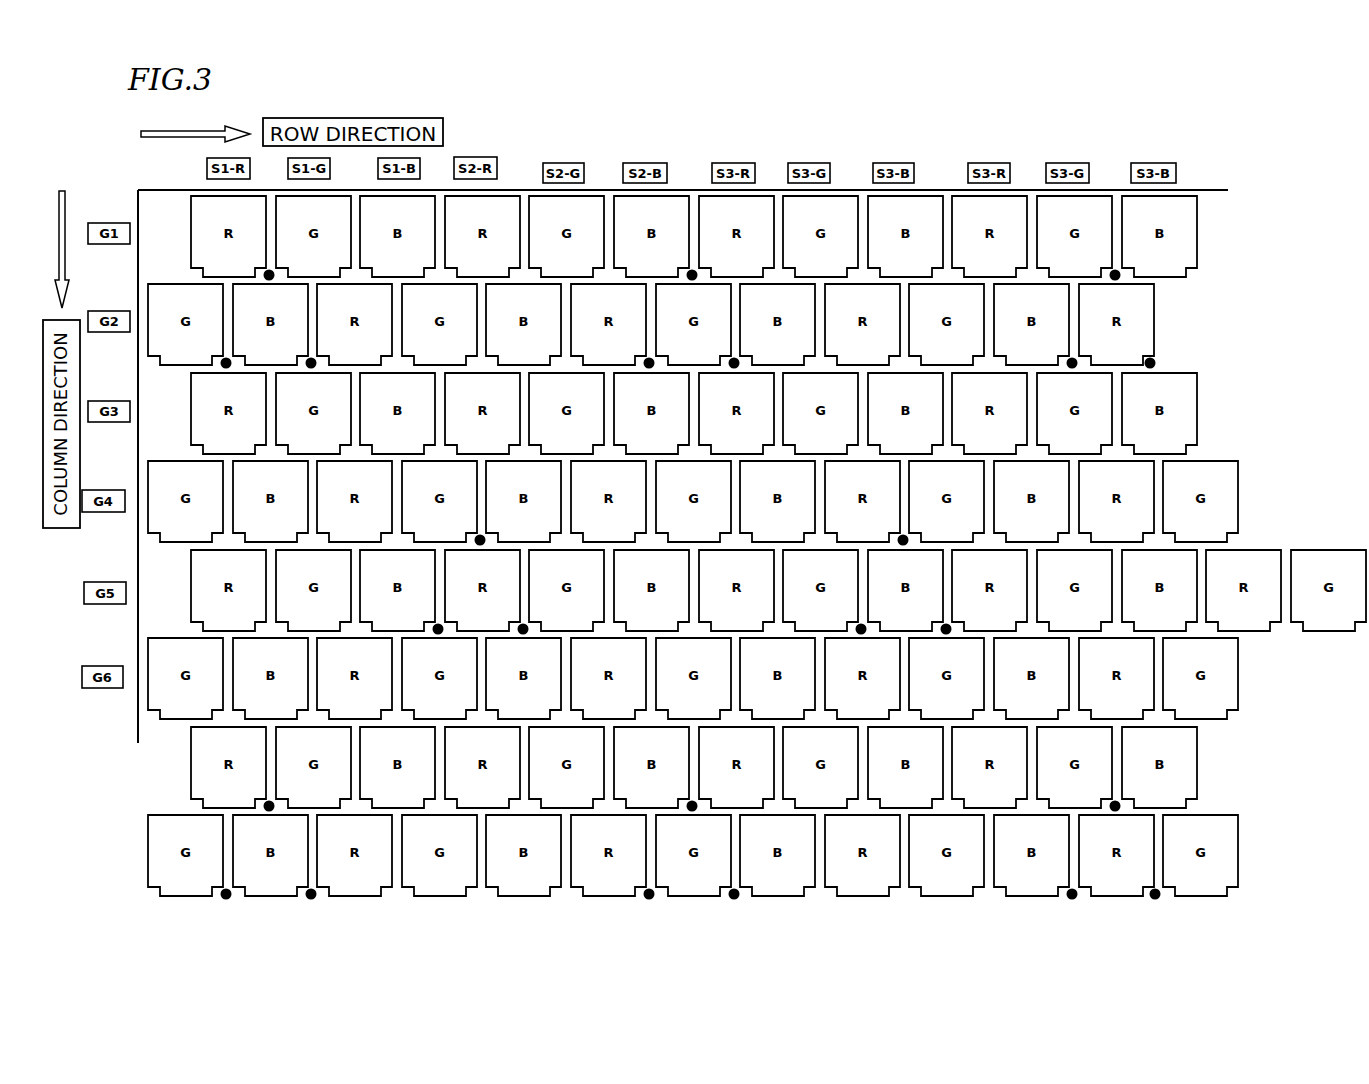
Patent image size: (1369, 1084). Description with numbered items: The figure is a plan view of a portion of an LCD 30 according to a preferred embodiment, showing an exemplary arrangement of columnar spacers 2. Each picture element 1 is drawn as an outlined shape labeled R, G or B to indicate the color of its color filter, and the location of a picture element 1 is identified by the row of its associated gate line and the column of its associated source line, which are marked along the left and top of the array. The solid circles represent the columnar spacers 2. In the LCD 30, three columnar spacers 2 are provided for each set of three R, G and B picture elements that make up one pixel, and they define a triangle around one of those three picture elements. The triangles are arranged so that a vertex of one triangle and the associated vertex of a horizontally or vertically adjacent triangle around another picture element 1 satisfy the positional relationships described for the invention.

The LCD 30 is at (1198, 167).
The picture element 1 is at (1190, 248).
The columnar spacer 2 is at (1120, 276).